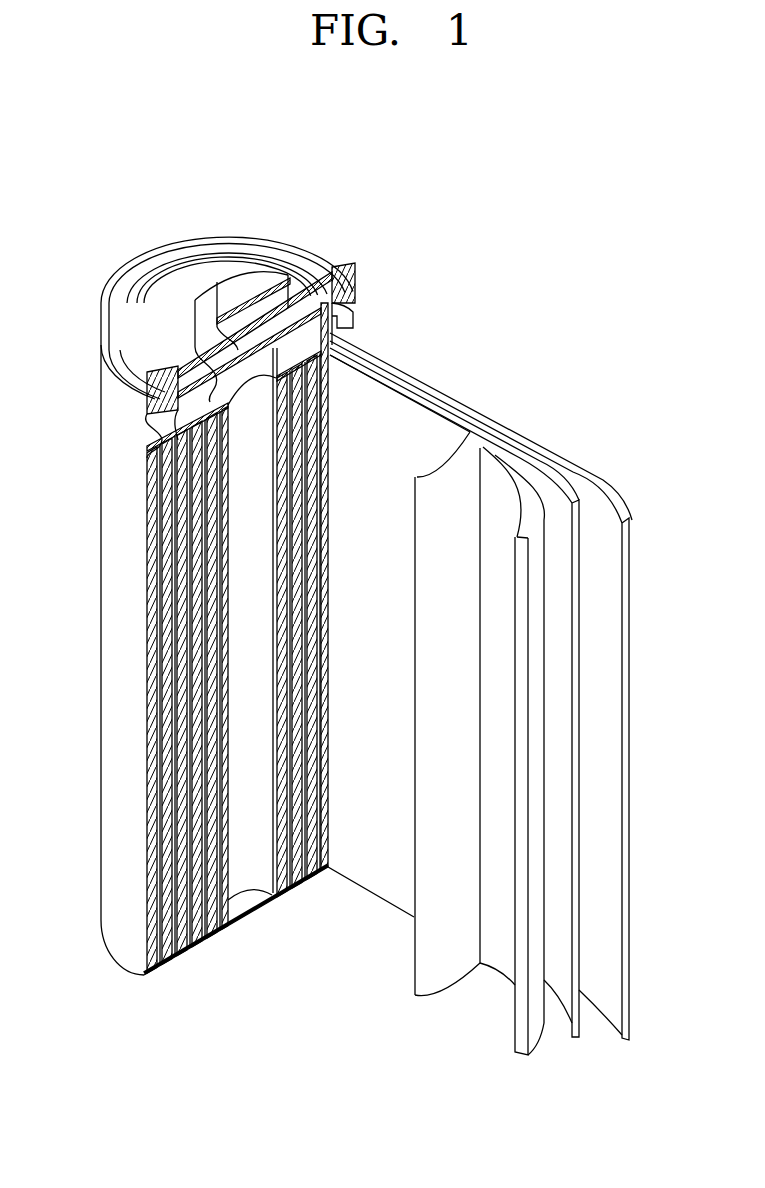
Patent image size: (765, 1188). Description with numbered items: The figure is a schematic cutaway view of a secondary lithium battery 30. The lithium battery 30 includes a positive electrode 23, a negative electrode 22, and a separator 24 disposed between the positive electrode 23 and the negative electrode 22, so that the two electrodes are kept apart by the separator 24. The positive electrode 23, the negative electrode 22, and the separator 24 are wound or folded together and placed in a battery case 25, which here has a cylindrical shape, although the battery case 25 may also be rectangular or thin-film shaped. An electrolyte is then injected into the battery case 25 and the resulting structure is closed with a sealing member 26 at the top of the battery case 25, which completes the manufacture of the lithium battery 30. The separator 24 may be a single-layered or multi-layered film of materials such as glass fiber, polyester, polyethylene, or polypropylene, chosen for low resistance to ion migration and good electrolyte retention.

The lithium battery 30 is at (472, 162).
The negative electrode 22 is at (607, 487).
The positive electrode 23 is at (533, 487).
The separator 24 is at (462, 432).
The battery case 25 is at (107, 651).
The sealing member 26 is at (223, 283).